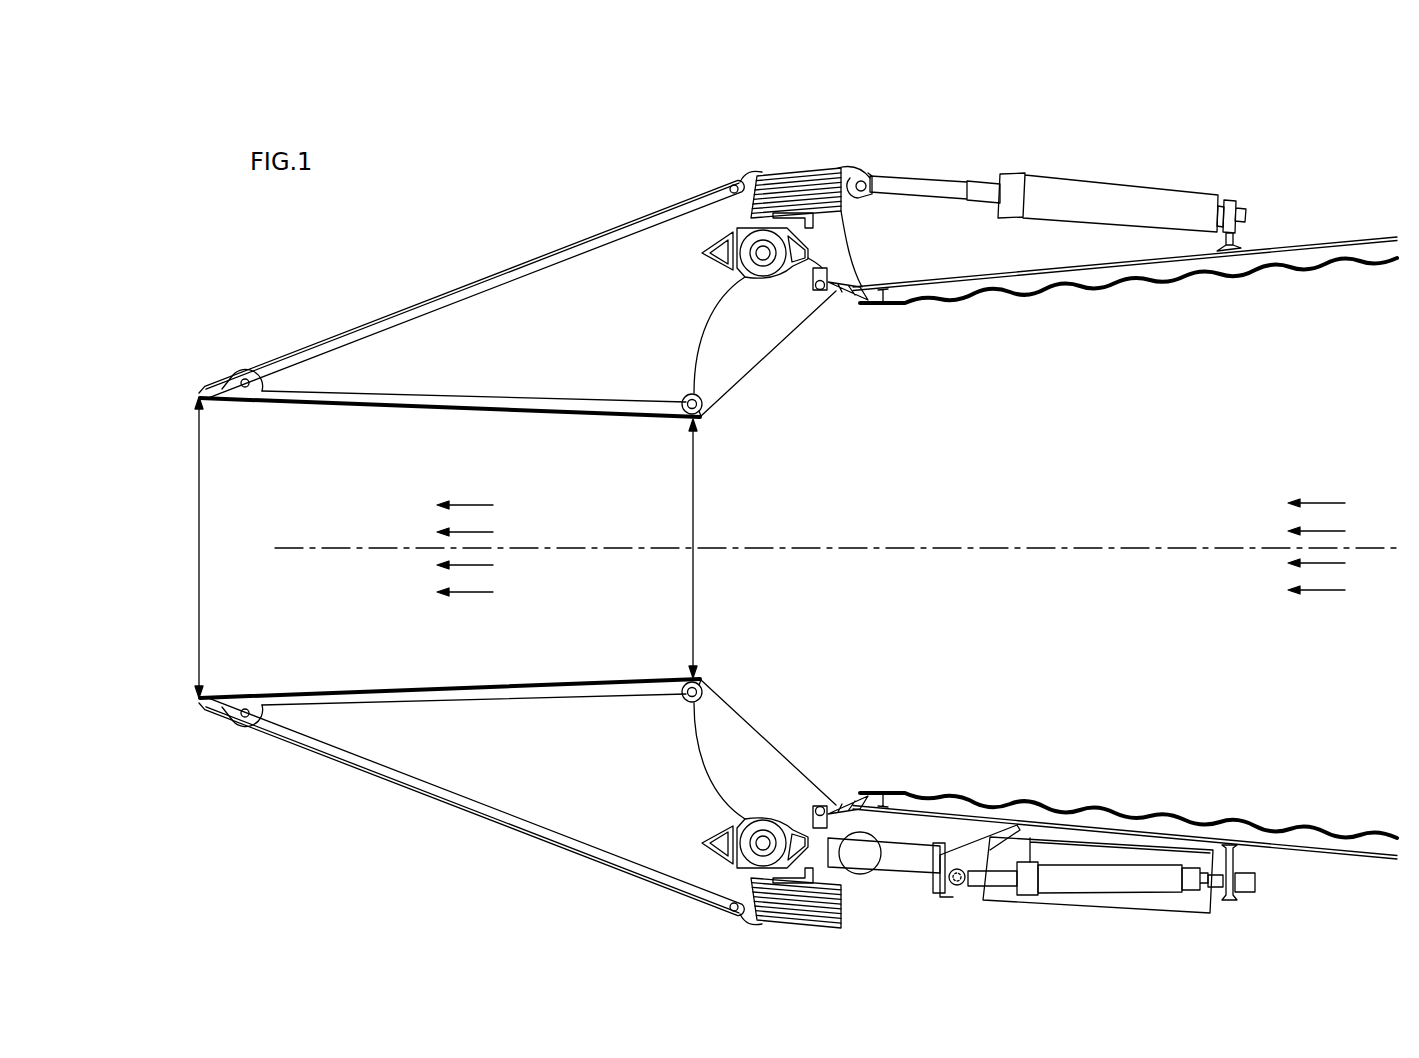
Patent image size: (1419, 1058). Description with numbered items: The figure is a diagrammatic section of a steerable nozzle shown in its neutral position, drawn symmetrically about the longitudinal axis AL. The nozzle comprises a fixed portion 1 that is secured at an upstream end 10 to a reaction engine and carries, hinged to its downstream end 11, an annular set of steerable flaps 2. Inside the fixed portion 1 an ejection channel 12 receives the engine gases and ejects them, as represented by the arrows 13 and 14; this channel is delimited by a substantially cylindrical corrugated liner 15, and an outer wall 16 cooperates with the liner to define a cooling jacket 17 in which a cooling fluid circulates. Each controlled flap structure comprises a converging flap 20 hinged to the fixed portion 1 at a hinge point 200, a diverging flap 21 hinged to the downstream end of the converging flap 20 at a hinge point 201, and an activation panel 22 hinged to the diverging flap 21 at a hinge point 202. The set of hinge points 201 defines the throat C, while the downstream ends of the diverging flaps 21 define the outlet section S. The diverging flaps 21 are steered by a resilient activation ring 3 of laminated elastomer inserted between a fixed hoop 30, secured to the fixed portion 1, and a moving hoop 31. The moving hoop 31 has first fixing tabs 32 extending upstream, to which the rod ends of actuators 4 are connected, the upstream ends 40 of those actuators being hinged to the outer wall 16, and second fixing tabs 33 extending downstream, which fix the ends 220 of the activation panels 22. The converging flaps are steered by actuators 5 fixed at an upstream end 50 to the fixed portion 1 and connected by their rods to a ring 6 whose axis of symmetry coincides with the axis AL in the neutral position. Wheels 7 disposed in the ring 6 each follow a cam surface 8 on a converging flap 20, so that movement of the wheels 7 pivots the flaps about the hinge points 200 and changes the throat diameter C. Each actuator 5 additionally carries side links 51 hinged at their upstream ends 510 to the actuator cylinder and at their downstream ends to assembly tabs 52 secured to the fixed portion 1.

The fixed portion 1 is at (1202, 286).
The upstream end 10 is at (1365, 306).
The downstream end 11 is at (852, 358).
The ejection channel 12 is at (1069, 524).
The arrows 13 is at (1317, 592).
The arrows 14 is at (472, 594).
The corrugated liner 15 is at (1330, 270).
The outer wall 16 is at (1258, 247).
The cooling jacket 17 is at (1378, 238).
The annular set of steerable flaps 2 is at (821, 418).
The converging flap 20 is at (773, 347).
The hinge point 200 is at (826, 297).
The hinge point 201 is at (702, 414).
The hinge point 202 is at (238, 378).
The diverging flap 21 is at (483, 400).
The activation panel 22 is at (430, 302).
The end of activation panel 220 is at (728, 182).
The resilient activation ring 3 is at (788, 190).
The fixed hoop 30 is at (833, 222).
The moving hoop 31 is at (806, 172).
The first fixing tabs 32 is at (850, 177).
The second fixing tabs 33 is at (757, 176).
The actuator 4 is at (1128, 196).
The upstream end of actuator 40 is at (1243, 206).
The converging flap control actuator 5 is at (1050, 845).
The upstream end of actuator 50 is at (1256, 882).
The side links 51 is at (1150, 870).
The upstream ends of side links 510 is at (1195, 868).
The assembly tabs 52 is at (960, 832).
The ring 6 is at (700, 252).
The wheel 7 is at (750, 276).
The cam surface 8 is at (712, 318).
The longitudinal axis AL is at (872, 548).
The outlet section S is at (206, 547).
The throat C is at (701, 548).